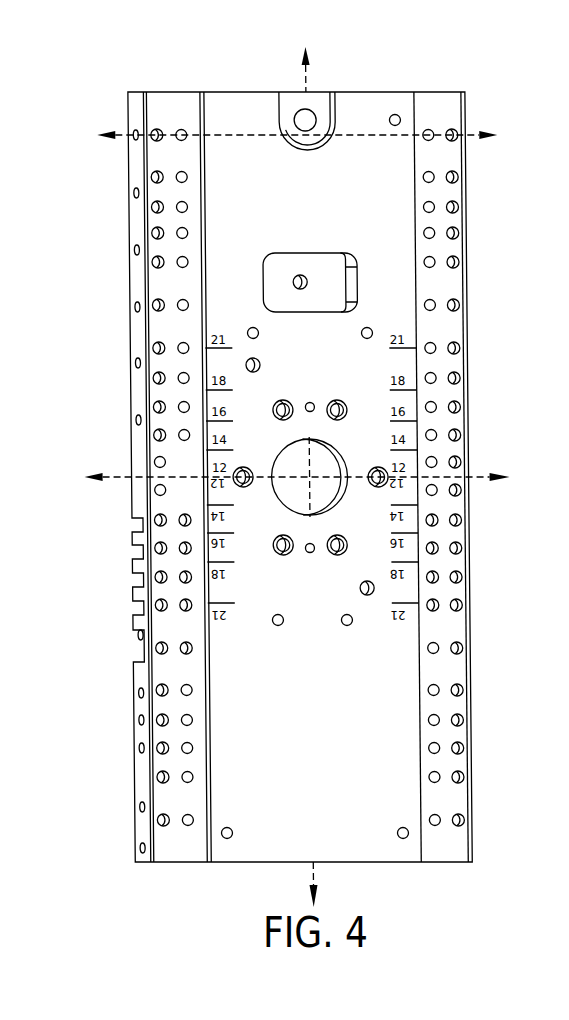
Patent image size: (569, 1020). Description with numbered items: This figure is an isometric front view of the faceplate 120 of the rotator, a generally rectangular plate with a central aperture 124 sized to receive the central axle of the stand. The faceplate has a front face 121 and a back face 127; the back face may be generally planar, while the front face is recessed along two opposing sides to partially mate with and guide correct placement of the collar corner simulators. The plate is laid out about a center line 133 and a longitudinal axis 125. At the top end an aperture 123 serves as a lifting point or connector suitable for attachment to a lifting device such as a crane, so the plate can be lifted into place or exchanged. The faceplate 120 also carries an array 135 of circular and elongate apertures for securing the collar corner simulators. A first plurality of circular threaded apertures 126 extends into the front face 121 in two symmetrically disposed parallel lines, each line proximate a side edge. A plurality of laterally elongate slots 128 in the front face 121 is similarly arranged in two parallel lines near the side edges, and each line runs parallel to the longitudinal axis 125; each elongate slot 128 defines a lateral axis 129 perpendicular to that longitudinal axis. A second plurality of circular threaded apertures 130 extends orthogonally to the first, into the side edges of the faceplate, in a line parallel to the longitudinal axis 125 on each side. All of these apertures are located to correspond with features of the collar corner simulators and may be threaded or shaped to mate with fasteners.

The faceplate 120 is at (112, 92).
The front face 121 is at (482, 819).
The aperture 123 is at (301, 117).
The central aperture 124 is at (314, 462).
The longitudinal axis 125 is at (311, 84).
The circular threaded apertures 126 is at (433, 603).
The back face 127 is at (106, 823).
The elongate slots 128 is at (456, 775).
The lateral axis 129 is at (467, 141).
The circular threaded apertures 130 is at (132, 748).
The center line 133 is at (474, 471).
The array 135 is at (484, 261).